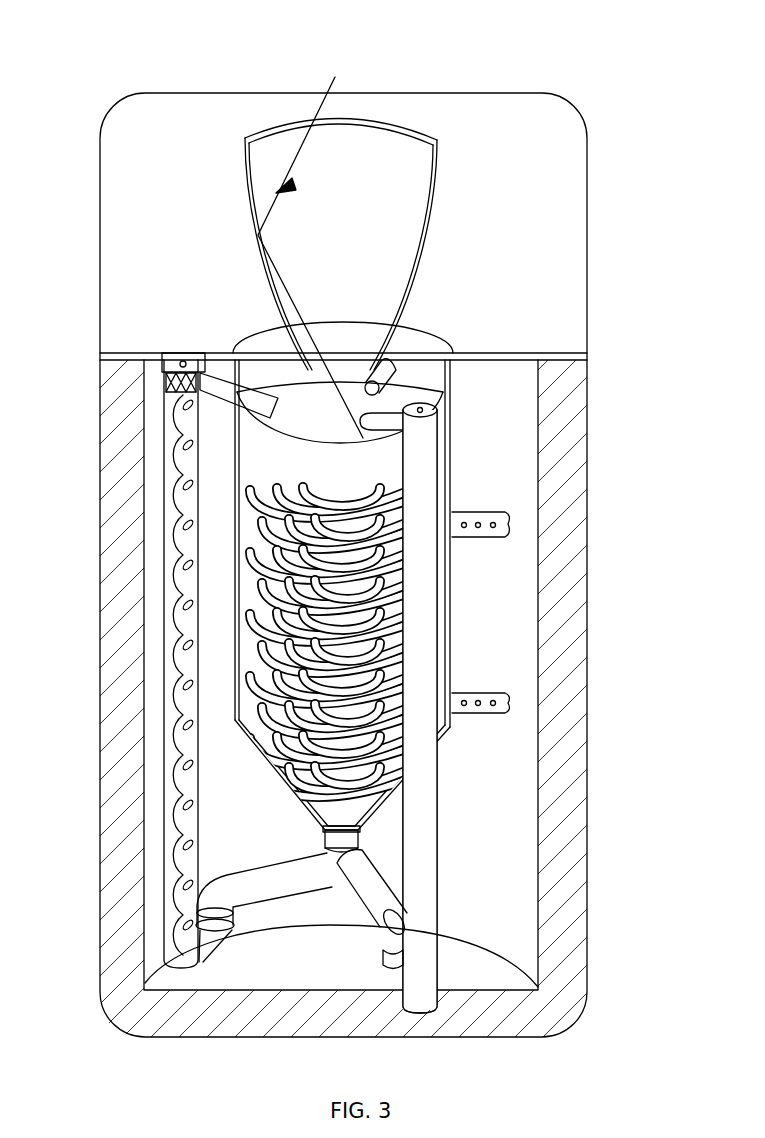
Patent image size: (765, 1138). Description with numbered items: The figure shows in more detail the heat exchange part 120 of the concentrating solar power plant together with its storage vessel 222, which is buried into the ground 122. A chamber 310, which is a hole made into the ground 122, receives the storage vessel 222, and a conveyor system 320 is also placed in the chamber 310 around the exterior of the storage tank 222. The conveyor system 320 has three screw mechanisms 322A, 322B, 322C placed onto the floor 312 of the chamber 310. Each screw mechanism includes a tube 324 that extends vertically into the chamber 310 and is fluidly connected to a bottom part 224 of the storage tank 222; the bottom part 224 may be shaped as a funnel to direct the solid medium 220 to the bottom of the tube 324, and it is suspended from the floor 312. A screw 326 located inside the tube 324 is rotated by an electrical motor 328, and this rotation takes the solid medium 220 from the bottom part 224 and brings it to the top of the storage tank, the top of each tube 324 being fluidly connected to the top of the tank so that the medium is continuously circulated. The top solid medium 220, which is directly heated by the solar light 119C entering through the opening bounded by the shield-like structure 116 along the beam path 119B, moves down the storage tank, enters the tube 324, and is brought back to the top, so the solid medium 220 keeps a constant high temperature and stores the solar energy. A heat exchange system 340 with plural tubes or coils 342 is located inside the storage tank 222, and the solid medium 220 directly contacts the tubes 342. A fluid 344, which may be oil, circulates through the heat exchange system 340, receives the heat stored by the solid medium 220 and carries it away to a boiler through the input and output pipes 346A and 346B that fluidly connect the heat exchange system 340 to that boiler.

The heat exchange part 120 is at (598, 68).
The light shield / reflector 116 is at (452, 223).
The light beam 119B is at (297, 150).
The solar light 119C is at (347, 396).
The solid medium 220 is at (398, 412).
The storage vessel 222 is at (428, 403).
The electrical motor 328 is at (198, 380).
The tube 324 is at (170, 548).
The screw mechanism 322B is at (163, 750).
The screw 326 is at (170, 830).
The tubes or coils 342 is at (392, 503).
The heat exchange system 340 is at (394, 550).
The fluid 344 is at (552, 651).
The input pipe 346A is at (472, 535).
The output pipe 346B is at (472, 712).
The ground 122 is at (556, 612).
The screw mechanism 322A is at (428, 800).
The screw mechanism 322C is at (380, 860).
The conveyor system 320 is at (443, 885).
The bottom part 224 is at (325, 826).
The chamber 310 is at (513, 865).
The floor 312 is at (315, 970).